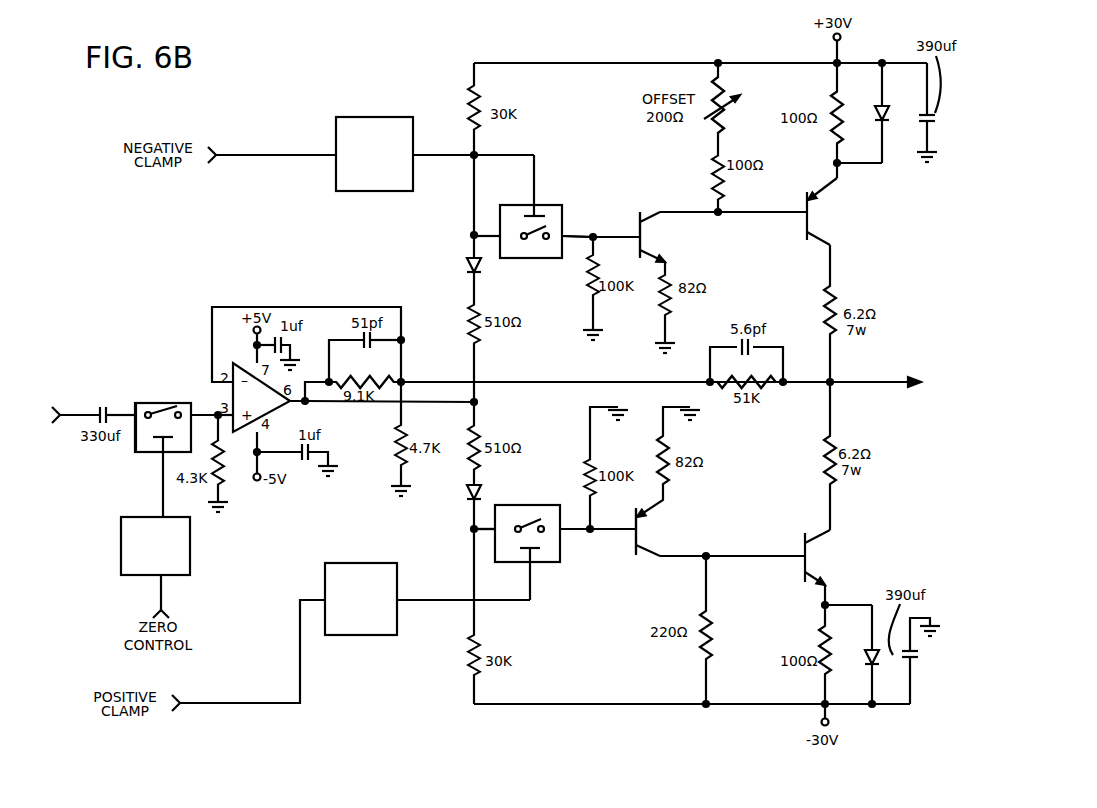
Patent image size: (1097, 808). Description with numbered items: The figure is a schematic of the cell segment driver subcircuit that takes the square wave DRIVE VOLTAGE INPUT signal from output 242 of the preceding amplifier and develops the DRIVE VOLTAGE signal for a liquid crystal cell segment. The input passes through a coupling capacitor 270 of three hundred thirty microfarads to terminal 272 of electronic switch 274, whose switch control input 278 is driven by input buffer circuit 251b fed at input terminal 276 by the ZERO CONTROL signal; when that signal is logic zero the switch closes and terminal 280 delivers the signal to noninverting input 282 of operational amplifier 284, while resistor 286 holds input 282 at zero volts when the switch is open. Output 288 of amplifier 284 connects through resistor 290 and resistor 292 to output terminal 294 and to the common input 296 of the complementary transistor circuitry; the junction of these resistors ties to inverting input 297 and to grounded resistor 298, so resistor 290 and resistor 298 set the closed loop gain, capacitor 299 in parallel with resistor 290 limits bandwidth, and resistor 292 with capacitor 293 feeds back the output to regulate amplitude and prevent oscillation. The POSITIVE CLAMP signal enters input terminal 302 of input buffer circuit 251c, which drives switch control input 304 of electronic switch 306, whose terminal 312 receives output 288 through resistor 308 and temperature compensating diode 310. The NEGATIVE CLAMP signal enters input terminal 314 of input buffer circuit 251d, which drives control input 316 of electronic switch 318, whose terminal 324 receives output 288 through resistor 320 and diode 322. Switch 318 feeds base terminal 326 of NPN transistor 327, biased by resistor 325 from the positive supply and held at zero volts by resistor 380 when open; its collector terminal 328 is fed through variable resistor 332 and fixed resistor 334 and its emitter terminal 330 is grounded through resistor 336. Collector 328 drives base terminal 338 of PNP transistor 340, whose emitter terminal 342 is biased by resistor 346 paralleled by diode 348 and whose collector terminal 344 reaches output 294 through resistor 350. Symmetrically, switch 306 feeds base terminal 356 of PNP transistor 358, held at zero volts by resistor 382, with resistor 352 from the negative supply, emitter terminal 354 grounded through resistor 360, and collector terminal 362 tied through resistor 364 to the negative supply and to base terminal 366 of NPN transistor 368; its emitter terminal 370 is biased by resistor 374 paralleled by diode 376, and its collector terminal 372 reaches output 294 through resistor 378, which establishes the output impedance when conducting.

The output 242 is at (64, 410).
The coupling capacitor 270 is at (100, 410).
The terminal 272 is at (128, 403).
The electronic switch 274 is at (140, 456).
The input terminal 276 is at (161, 597).
The switch control input 278 is at (163, 497).
The input buffer circuit 251b is at (120, 548).
The input buffer circuit 251c is at (365, 563).
The input buffer circuit 251d is at (368, 117).
The terminal 280 is at (200, 411).
The noninverting input 282 is at (235, 428).
The operational amplifier 284 is at (268, 411).
The resistor 286 is at (222, 466).
The output 288 is at (305, 396).
The resistor 290 is at (378, 378).
The resistor 292 is at (765, 386).
The capacitor 293 is at (740, 346).
The output terminal 294 is at (872, 382).
The common input 296 is at (478, 402).
The inverting input 297 is at (216, 380).
The resistor 298 is at (397, 450).
The capacitor 299 is at (360, 340).
The input terminal 302 is at (256, 703).
The switch control input 304 is at (532, 580).
The electronic switch 306 is at (528, 505).
The resistor 308 is at (470, 462).
The temperature compensating diode 310 is at (466, 498).
The terminal 312 is at (487, 527).
The input terminal 314 is at (268, 155).
The control input 316 is at (535, 176).
The electronic switch 318 is at (530, 259).
The resistor 320 is at (470, 318).
The temperature compensating diode 322 is at (466, 266).
The terminal 324 is at (498, 222).
The resistor 325 is at (480, 98).
The base terminal 326 is at (608, 236).
The NPN transistor 327 is at (648, 233).
The collector terminal 328 is at (665, 212).
The emitter terminal 330 is at (655, 262).
The variable resistor 332 is at (722, 101).
The fixed resistor 334 is at (712, 165).
The resistor 336 is at (665, 315).
The base terminal 338 is at (768, 212).
The PNP transistor 340 is at (820, 208).
The emitter terminal 342 is at (842, 181).
The collector terminal 344 is at (838, 238).
The resistor 346 is at (828, 135).
The diode 348 is at (890, 110).
The resistor 350 is at (825, 296).
The resistor 352 is at (470, 650).
The emitter terminal 354 is at (664, 498).
The base terminal 356 is at (612, 533).
The PNP transistor 358 is at (642, 538).
The resistor 360 is at (668, 446).
The collector terminal 362 is at (645, 563).
The resistor 364 is at (708, 618).
The base terminal 366 is at (750, 557).
The NPN transistor 368 is at (812, 565).
The emitter terminal 370 is at (822, 591).
The collector terminal 372 is at (834, 526).
The resistor 374 is at (820, 637).
The diode 376 is at (865, 651).
The resistor 378 is at (825, 455).
The resistor 380 is at (590, 291).
The resistor 382 is at (588, 466).